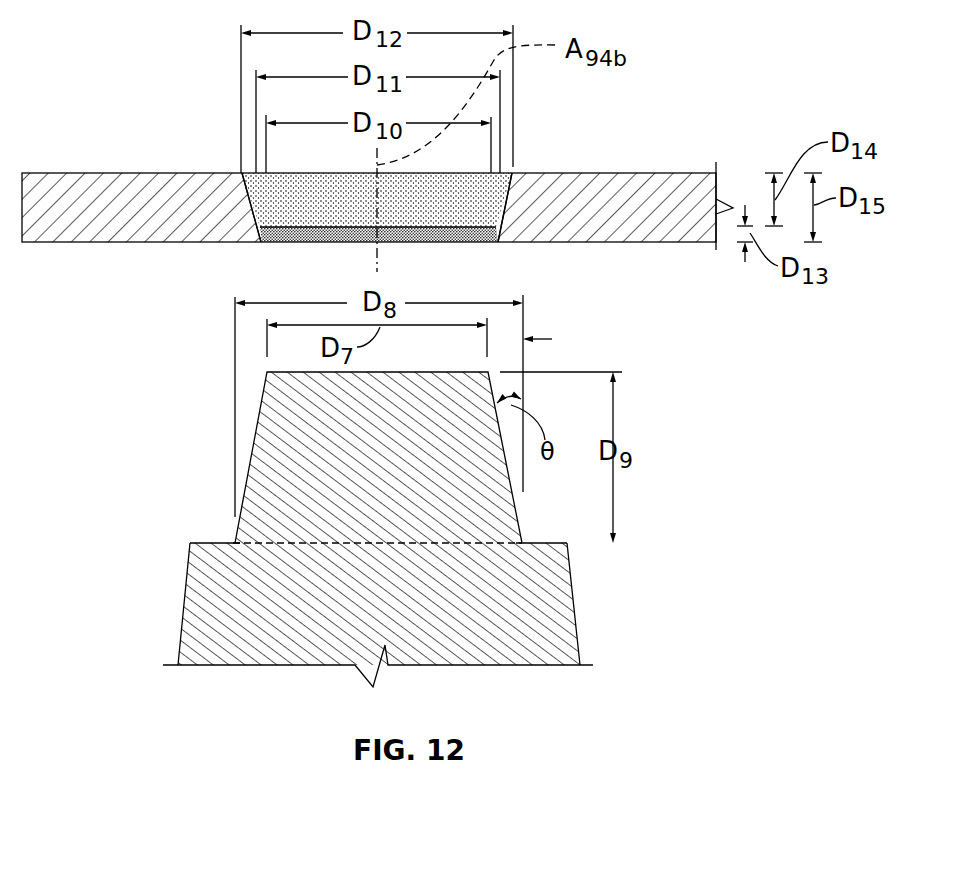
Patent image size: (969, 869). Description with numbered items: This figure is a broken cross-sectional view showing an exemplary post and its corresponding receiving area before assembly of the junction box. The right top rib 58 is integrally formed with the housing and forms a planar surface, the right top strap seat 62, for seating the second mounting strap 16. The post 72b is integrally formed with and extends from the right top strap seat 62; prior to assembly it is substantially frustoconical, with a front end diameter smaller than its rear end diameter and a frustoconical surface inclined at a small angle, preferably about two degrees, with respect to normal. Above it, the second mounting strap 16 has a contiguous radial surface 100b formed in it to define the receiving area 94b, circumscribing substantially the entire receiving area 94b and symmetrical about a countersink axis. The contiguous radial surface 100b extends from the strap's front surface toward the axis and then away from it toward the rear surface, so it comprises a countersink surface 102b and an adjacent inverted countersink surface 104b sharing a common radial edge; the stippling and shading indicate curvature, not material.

The second mounting strap 16 is at (136, 184).
The receiving area 94b is at (311, 207).
The contiguous radial surface 100b is at (275, 180).
The countersink surface 102b is at (472, 187).
The inverted countersink surface 104b is at (458, 243).
The post 72b is at (290, 432).
The right top strap seat 62 is at (211, 543).
The right top rib 58 is at (212, 590).